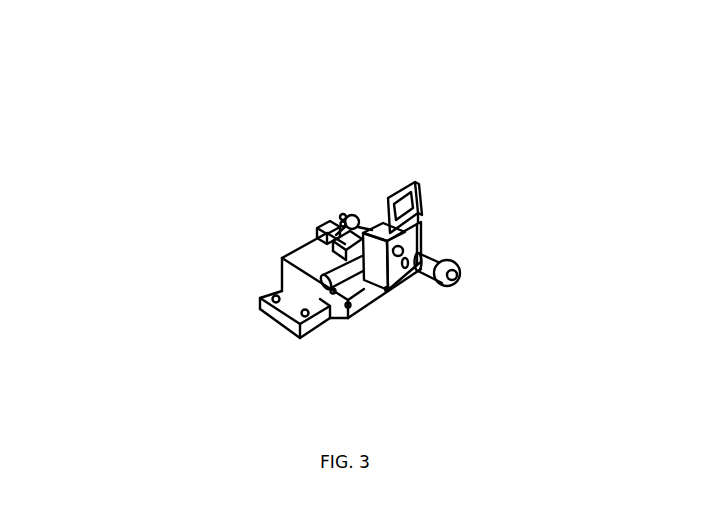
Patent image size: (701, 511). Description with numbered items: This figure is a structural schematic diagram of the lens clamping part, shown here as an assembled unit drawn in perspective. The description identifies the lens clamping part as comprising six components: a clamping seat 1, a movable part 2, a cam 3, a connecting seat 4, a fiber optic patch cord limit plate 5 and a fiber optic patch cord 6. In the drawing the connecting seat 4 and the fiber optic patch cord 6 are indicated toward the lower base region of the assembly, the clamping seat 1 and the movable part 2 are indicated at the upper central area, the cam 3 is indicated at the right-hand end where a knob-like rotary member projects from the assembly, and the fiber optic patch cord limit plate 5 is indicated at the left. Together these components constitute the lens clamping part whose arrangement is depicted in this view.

The clamping seat 1 is at (354, 210).
The movable part 2 is at (415, 176).
The cam 3 is at (455, 250).
The connecting seat 4 is at (318, 220).
The fiber optic patch cord limit plate 5 is at (305, 257).
The fiber optic patch cord 6 is at (326, 279).